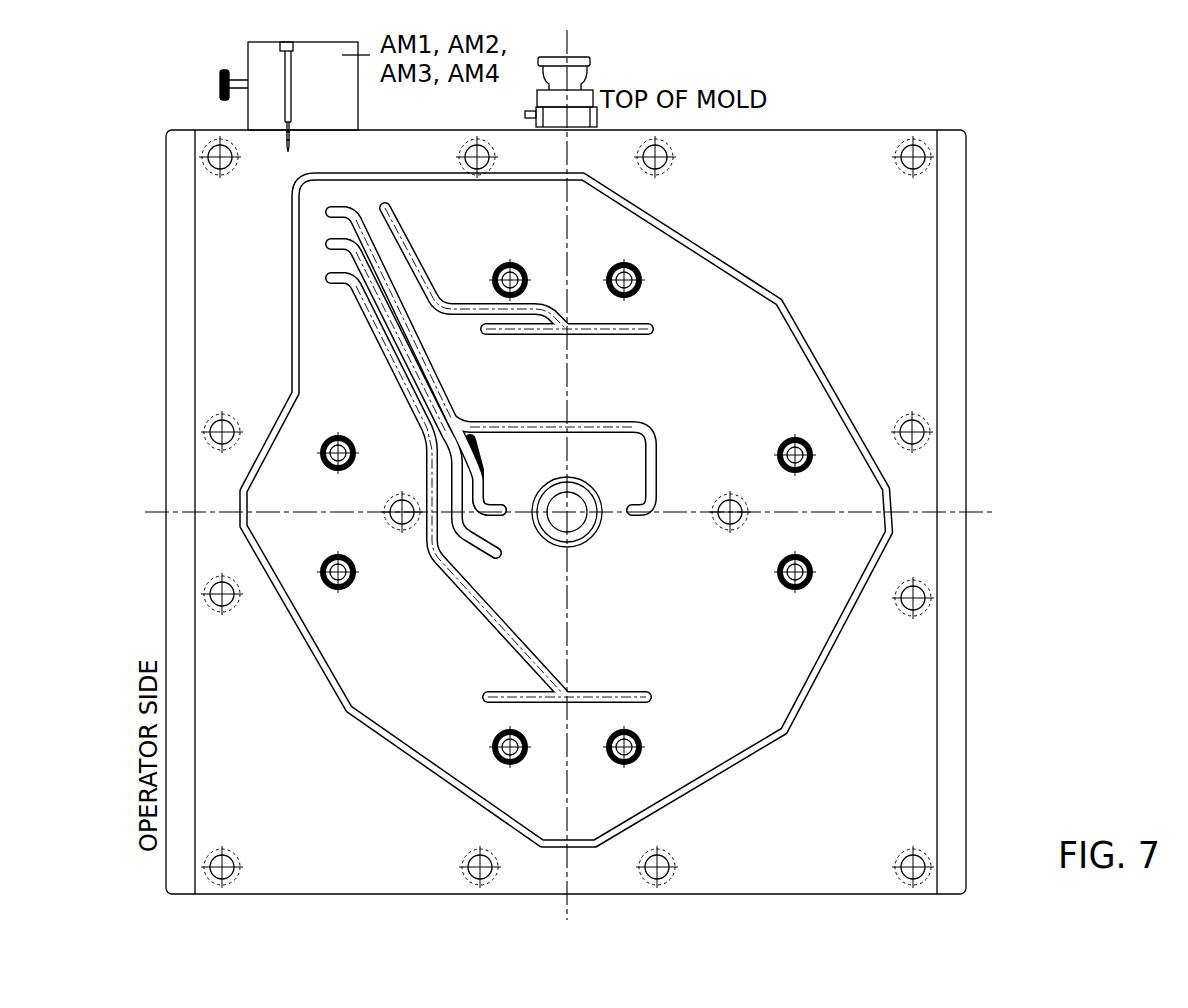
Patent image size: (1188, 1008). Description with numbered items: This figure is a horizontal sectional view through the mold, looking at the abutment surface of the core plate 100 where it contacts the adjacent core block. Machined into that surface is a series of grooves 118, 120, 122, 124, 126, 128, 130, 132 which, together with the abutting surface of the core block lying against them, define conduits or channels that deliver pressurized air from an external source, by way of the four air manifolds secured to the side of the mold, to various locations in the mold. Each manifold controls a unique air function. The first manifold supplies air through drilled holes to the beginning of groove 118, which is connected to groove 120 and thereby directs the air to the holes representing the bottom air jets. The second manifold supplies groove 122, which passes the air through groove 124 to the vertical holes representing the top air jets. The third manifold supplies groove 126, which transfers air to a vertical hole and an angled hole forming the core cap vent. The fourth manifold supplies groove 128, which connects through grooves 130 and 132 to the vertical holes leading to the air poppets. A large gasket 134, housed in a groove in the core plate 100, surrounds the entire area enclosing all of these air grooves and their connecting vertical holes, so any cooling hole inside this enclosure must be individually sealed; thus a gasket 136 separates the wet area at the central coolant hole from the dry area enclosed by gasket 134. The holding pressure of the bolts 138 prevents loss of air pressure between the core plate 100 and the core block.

The core plate 100 is at (952, 270).
The groove 118 is at (396, 400).
The groove 120 is at (482, 694).
The groove 122 is at (404, 247).
The groove 124 is at (627, 322).
The groove 126 is at (387, 339).
The groove 128 is at (385, 289).
The groove 130 is at (471, 467).
The groove 132 is at (617, 420).
The gasket 134 is at (835, 645).
The gasket 136 is at (600, 495).
The bolts 138 is at (931, 597).